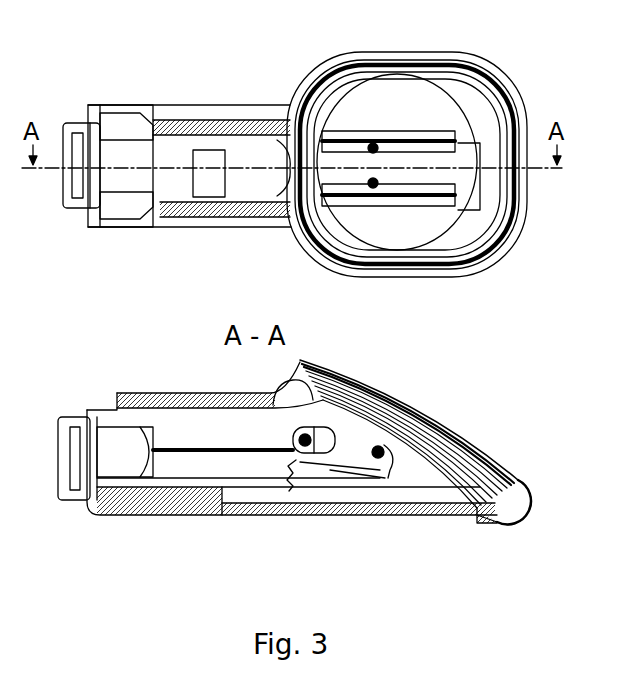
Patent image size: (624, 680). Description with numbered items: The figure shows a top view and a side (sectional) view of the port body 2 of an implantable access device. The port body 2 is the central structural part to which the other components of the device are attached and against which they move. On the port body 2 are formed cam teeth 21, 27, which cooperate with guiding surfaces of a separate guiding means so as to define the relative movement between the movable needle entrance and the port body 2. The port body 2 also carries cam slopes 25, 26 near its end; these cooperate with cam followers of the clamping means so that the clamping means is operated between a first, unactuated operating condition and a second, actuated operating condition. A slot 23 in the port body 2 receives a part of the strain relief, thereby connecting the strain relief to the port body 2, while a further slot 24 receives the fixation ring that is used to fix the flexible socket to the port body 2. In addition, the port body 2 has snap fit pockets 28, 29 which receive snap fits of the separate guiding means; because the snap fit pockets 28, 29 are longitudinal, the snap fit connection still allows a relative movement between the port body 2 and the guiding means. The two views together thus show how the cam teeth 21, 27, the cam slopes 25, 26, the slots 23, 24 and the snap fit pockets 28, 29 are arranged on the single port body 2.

The port body 2 is at (203, 385).
The cam teeth 21 is at (396, 222).
The slot (strain relief) 23 is at (60, 502).
The slot (ring) 24 is at (520, 478).
The cam slope 25 is at (139, 207).
The cam slope 26 is at (137, 132).
The cam teeth 27 is at (388, 138).
The snap fit pocket 28 is at (308, 445).
The snap fit pocket 29 is at (380, 546).